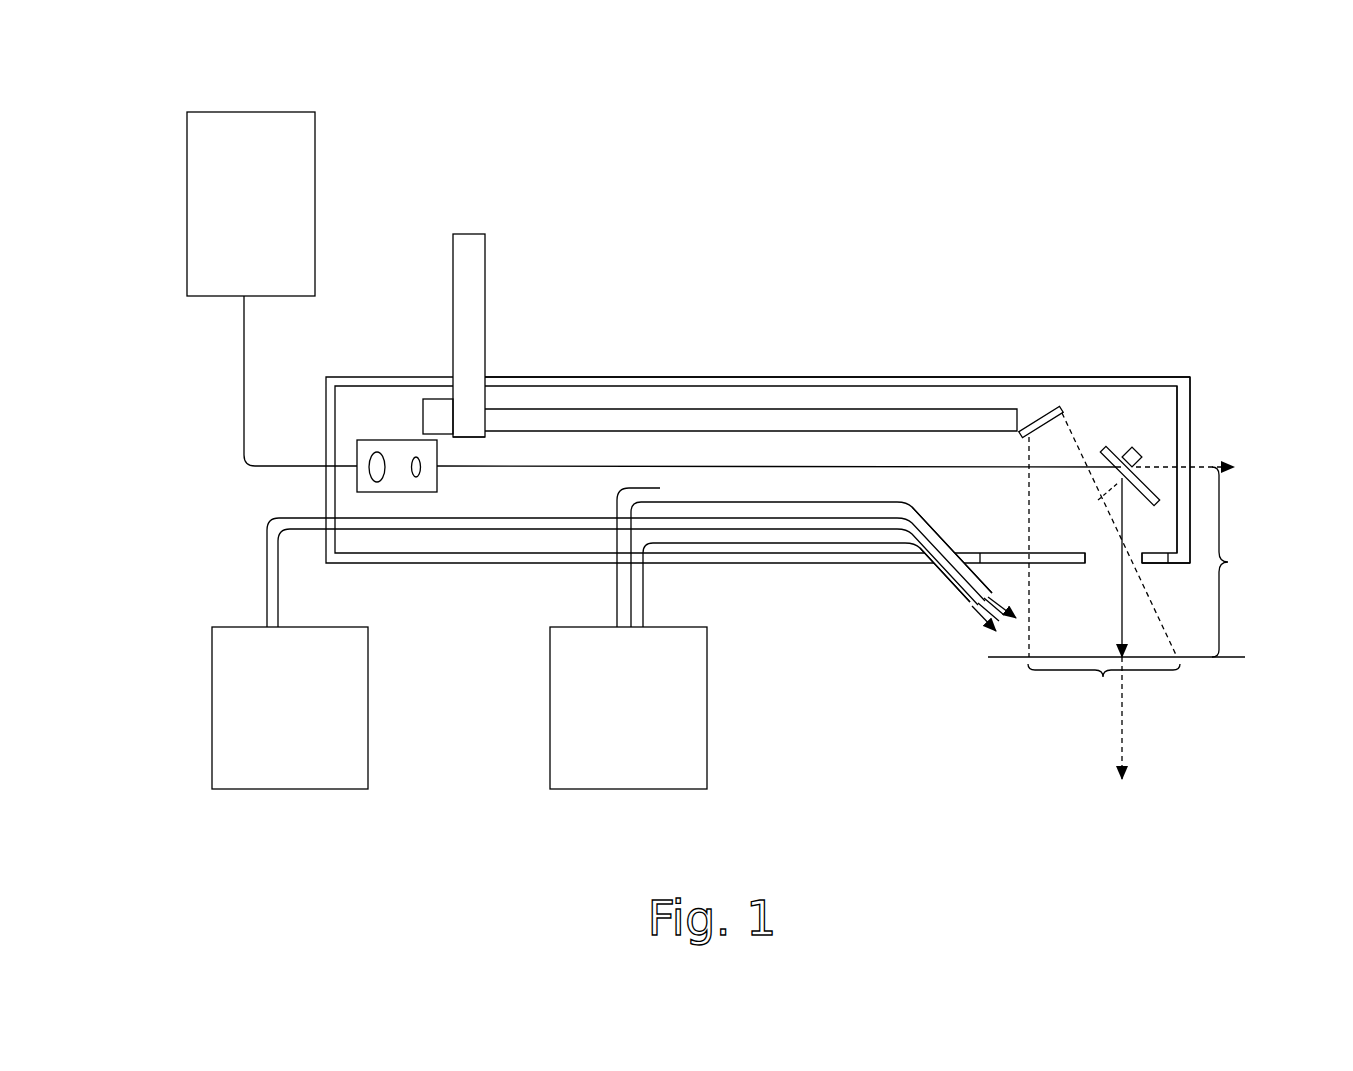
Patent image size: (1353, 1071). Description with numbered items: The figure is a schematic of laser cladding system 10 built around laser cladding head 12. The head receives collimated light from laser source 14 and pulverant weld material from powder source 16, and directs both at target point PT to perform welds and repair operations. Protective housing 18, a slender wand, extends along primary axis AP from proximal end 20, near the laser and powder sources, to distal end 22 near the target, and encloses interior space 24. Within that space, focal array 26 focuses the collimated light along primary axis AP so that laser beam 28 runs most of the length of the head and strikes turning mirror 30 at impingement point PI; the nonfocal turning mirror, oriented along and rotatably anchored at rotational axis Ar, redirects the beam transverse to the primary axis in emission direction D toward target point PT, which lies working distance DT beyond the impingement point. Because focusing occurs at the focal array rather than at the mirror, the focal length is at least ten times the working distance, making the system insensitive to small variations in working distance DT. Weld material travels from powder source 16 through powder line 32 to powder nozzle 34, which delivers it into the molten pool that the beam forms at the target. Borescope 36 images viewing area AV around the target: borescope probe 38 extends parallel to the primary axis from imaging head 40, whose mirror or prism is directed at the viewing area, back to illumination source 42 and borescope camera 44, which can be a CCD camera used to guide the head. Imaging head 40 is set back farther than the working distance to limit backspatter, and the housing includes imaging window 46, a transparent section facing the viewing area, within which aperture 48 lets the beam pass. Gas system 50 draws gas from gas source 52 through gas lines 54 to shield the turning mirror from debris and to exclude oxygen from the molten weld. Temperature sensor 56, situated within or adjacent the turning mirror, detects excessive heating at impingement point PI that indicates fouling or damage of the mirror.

The laser cladding system 10 is at (902, 128).
The laser cladding head 12 is at (772, 276).
The laser source 14 is at (316, 190).
The powder source 16 is at (212, 703).
The protective housing 18 is at (918, 374).
The proximal end 20 is at (326, 487).
The distal end 22 is at (1192, 413).
The interior space 24 is at (837, 500).
The focal array 26 is at (395, 452).
The laser beam 28 is at (648, 464).
The turning mirror 30 is at (1118, 449).
The powder line 32 is at (510, 524).
The powder nozzle 34 is at (975, 607).
The borescope 36 is at (494, 356).
The borescope probe 38 is at (670, 420).
The imaging head 40 is at (1026, 416).
The illumination source 42 is at (470, 272).
The borescope camera 44 is at (437, 398).
The imaging window 46 is at (1157, 565).
The aperture 48 is at (1146, 552).
The gas system 50 is at (668, 614).
The gas source 52 is at (707, 737).
The gas lines 54 is at (617, 598).
The temperature sensor 56 is at (1138, 452).
The emission direction D is at (662, 494).
The primary axis AP is at (1203, 472).
The rotational axis Ar is at (1158, 466).
The impingement point PI is at (1120, 470).
The target point PT is at (1125, 662).
The working distance DT is at (1238, 562).
The viewing area AV is at (1104, 688).